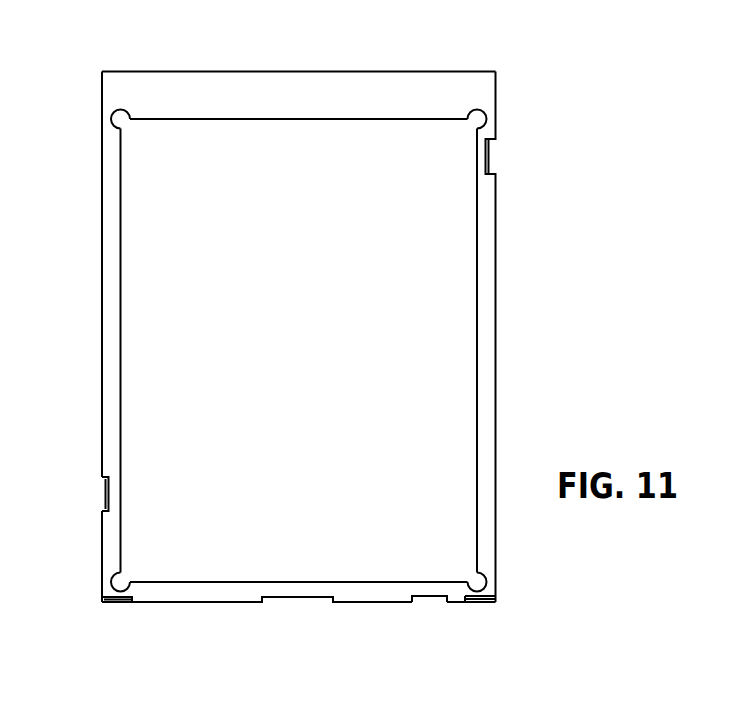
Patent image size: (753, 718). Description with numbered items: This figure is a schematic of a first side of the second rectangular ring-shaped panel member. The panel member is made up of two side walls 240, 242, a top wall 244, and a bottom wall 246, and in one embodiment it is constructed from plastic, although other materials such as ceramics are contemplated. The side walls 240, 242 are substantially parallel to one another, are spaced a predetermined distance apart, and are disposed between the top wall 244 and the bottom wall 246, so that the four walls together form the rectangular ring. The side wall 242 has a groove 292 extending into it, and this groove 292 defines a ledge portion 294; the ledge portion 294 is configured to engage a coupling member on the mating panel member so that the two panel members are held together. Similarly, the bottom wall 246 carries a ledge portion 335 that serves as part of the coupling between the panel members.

The side wall 240 is at (485, 370).
The side wall 242 is at (104, 352).
The top wall 244 is at (298, 71).
The bottom wall 246 is at (371, 603).
The groove 292 is at (104, 503).
The ledge portion 294 is at (104, 491).
The ledge portion 335 is at (430, 603).